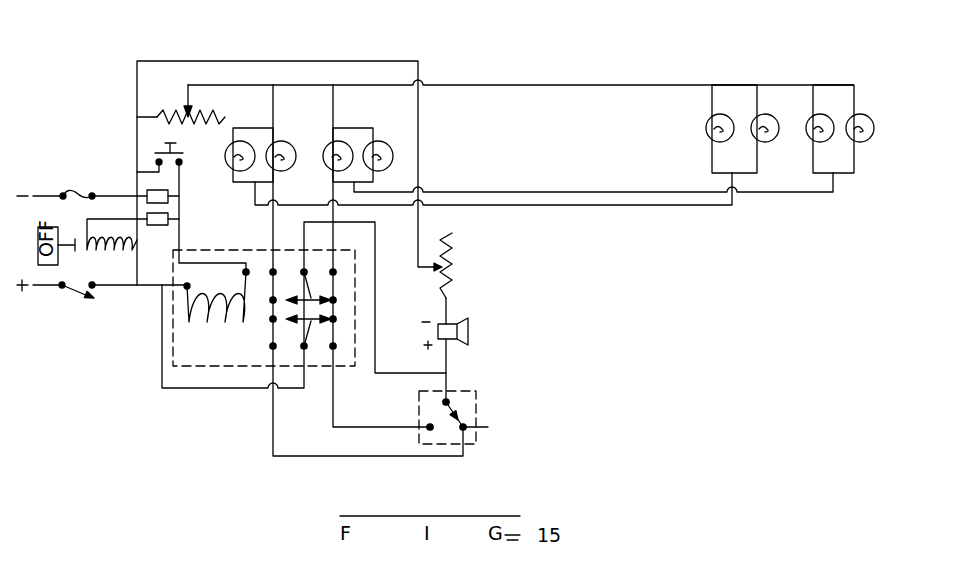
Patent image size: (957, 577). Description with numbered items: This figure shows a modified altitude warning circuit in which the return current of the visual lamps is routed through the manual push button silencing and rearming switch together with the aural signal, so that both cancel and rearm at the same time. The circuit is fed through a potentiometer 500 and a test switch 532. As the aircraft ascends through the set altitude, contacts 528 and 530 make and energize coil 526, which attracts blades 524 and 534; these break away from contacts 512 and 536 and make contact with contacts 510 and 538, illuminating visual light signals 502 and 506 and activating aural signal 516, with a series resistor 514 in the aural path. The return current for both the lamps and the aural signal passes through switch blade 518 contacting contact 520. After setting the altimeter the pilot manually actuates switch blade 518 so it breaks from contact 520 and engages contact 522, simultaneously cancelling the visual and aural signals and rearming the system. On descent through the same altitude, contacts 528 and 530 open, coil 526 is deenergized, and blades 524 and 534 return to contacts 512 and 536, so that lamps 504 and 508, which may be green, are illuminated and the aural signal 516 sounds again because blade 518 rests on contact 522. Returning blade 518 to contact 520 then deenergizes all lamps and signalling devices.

The potentiometer 500 is at (183, 108).
The visual light signal 502 is at (272, 141).
The lamp 504 is at (362, 140).
The visual light signal 506 is at (753, 118).
The lamp 508 is at (853, 118).
The contact 510 is at (271, 297).
The contact 512 is at (333, 300).
The variable resistor 514 is at (452, 253).
The aural signal 516 is at (452, 322).
The switch blade 518 is at (448, 402).
The contact 520 is at (466, 427).
The contact 522 is at (430, 425).
The blade 524 is at (311, 291).
The coil 526 is at (223, 325).
The contact 528 is at (160, 190).
The contact 530 is at (168, 212).
The test switch 532 is at (165, 147).
The blade 534 is at (310, 331).
The contact 536 is at (333, 319).
The contact 538 is at (270, 320).